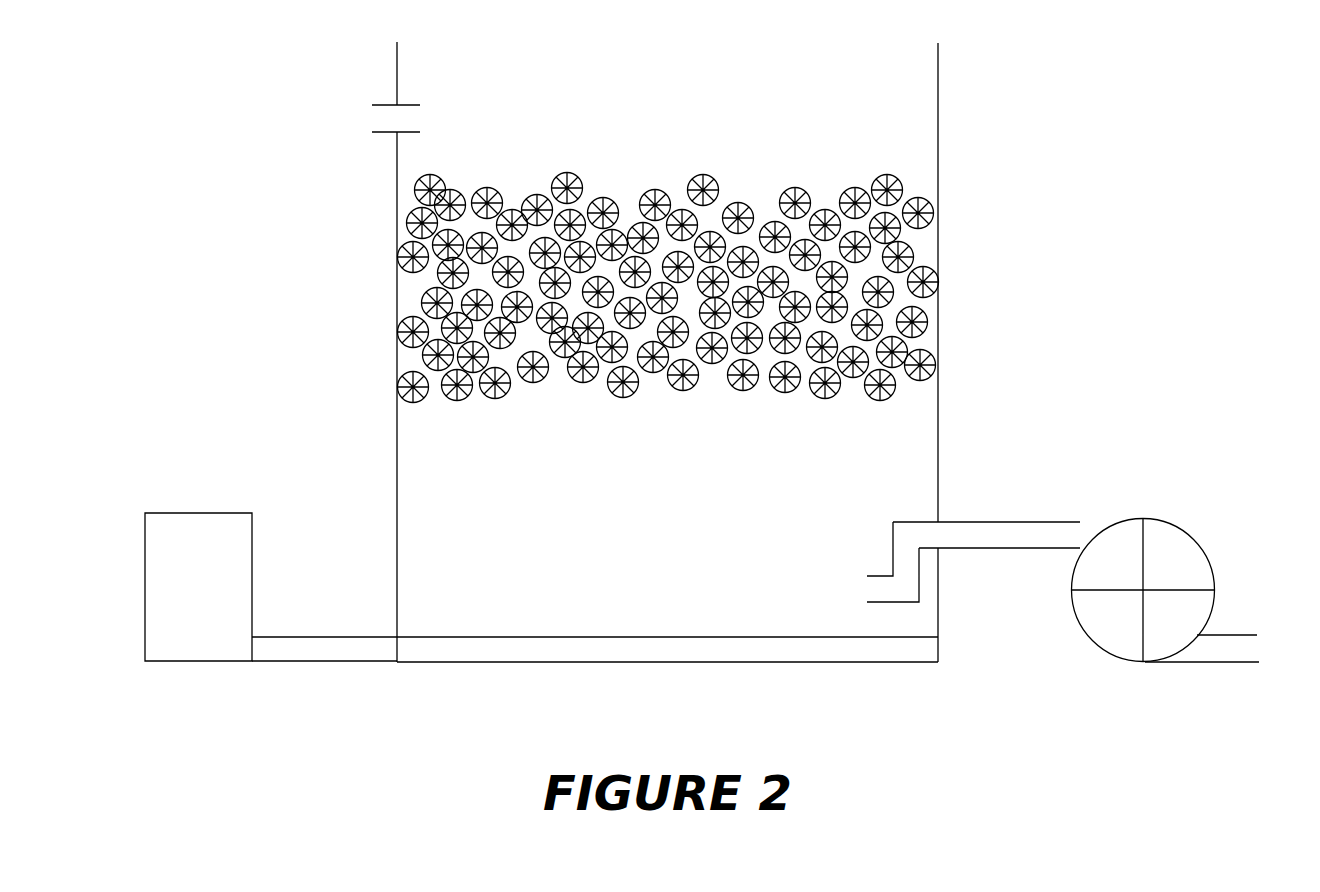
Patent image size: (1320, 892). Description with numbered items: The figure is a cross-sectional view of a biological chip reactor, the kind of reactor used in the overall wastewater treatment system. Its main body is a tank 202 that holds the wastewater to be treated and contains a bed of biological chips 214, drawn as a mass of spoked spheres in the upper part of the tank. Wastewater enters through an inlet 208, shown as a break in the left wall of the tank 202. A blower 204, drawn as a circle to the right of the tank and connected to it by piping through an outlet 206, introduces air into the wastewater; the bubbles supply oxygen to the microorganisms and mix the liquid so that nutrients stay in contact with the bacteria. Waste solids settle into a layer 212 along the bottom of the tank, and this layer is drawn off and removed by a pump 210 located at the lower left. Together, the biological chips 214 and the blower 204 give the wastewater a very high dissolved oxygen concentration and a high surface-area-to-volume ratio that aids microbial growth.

The tank 202 is at (938, 99).
The blower 204 is at (1187, 530).
The outlet pipe 206 is at (876, 603).
The inlet 208 is at (418, 105).
The pump 210 is at (205, 512).
The layer 212 is at (515, 645).
The biological chips 214 is at (622, 398).